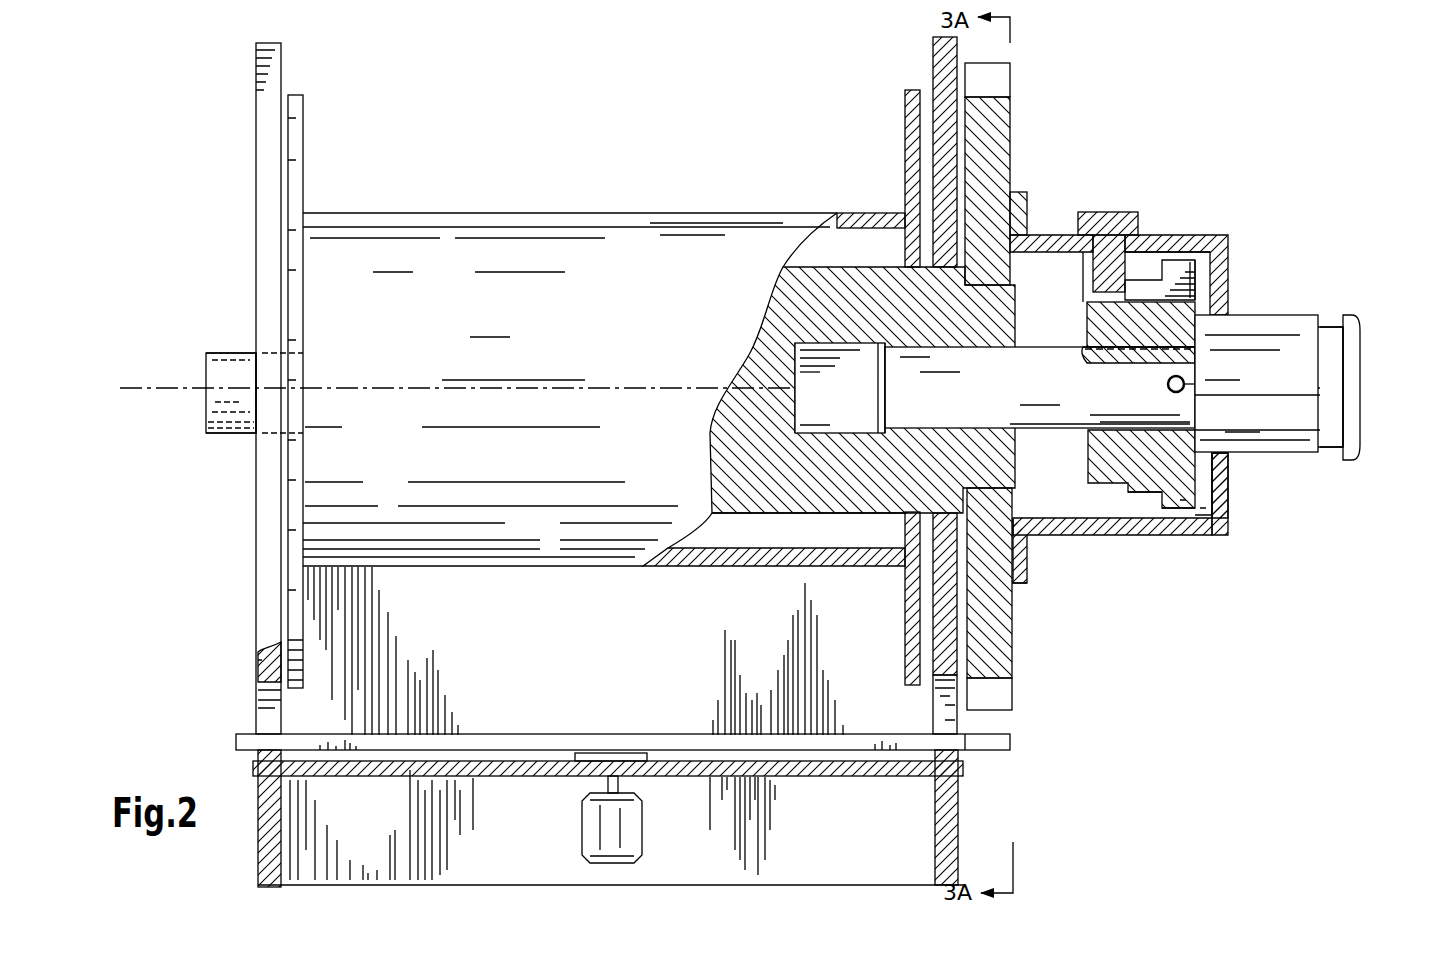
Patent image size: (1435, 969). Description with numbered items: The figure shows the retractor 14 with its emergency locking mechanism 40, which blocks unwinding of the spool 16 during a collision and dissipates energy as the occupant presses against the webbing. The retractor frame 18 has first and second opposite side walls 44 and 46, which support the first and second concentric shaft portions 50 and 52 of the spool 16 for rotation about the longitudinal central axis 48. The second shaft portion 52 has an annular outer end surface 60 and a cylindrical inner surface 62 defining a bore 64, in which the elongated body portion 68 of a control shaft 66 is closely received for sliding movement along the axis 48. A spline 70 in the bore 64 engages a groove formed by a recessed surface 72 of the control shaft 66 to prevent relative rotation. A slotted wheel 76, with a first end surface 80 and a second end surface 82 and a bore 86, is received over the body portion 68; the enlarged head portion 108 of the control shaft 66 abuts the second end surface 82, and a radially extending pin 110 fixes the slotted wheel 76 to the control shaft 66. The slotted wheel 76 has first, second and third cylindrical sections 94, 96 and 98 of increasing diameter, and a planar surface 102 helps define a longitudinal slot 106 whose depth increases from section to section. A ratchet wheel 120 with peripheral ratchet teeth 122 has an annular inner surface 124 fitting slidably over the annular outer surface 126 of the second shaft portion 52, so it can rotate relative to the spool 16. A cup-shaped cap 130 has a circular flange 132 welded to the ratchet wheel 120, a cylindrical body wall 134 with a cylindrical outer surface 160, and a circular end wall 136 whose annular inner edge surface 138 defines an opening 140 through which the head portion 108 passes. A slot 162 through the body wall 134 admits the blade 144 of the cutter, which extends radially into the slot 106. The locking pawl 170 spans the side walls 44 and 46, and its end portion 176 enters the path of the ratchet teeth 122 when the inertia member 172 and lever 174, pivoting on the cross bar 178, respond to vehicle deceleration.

The retractor 14 is at (176, 243).
The spool 16 is at (716, 213).
The retractor frame 18 is at (252, 87).
The emergency locking mechanism 40 is at (1122, 103).
The first side wall 44 is at (262, 118).
The second side wall 46 is at (943, 63).
The longitudinal central axis 48 is at (175, 385).
The first shaft portion 50 is at (246, 352).
The second shaft portion 52 is at (947, 278).
The annular outer end surface 60 is at (1017, 478).
The cylindrical inner surface 62 is at (805, 416).
The bore 64 is at (870, 419).
The control shaft 66 is at (1363, 392).
The body portion 68 is at (898, 373).
The spline 70 is at (818, 342).
The recessed surface 72 is at (925, 343).
The slotted wheel 76 is at (1202, 302).
The first end surface 80 is at (1085, 325).
The second end surface 82 is at (1200, 325).
The bore 86 is at (1201, 394).
The first cylindrical section 94 is at (1105, 484).
The second cylindrical section 96 is at (1143, 494).
The third cylindrical section 98 is at (1175, 512).
The planar surface 102 is at (1090, 297).
The slot 106 is at (1200, 280).
The head portion 108 is at (1312, 366).
The pin 110 is at (1182, 378).
The ratchet wheel 120 is at (1013, 63).
The ratchet teeth 122 is at (988, 82).
The annular inner surface 124 is at (988, 515).
The annular outer surface 126 is at (985, 495).
The cup-shaped cap 130 is at (1236, 524).
The circular flange 132 is at (1015, 584).
The cylindrical body wall 134 is at (1206, 537).
The circular end wall 136 is at (1220, 506).
The annular inner edge surface 138 is at (1247, 434).
The opening 140 is at (1098, 210).
The blade 144 is at (1115, 270).
The cylindrical outer surface 160 is at (1223, 234).
The slot 162 is at (1110, 243).
The locking pawl 170 is at (576, 735).
The inertia member 172 is at (598, 820).
The lever 174 is at (632, 755).
The end portion 176 is at (1005, 740).
The cross bar 178 is at (556, 777).